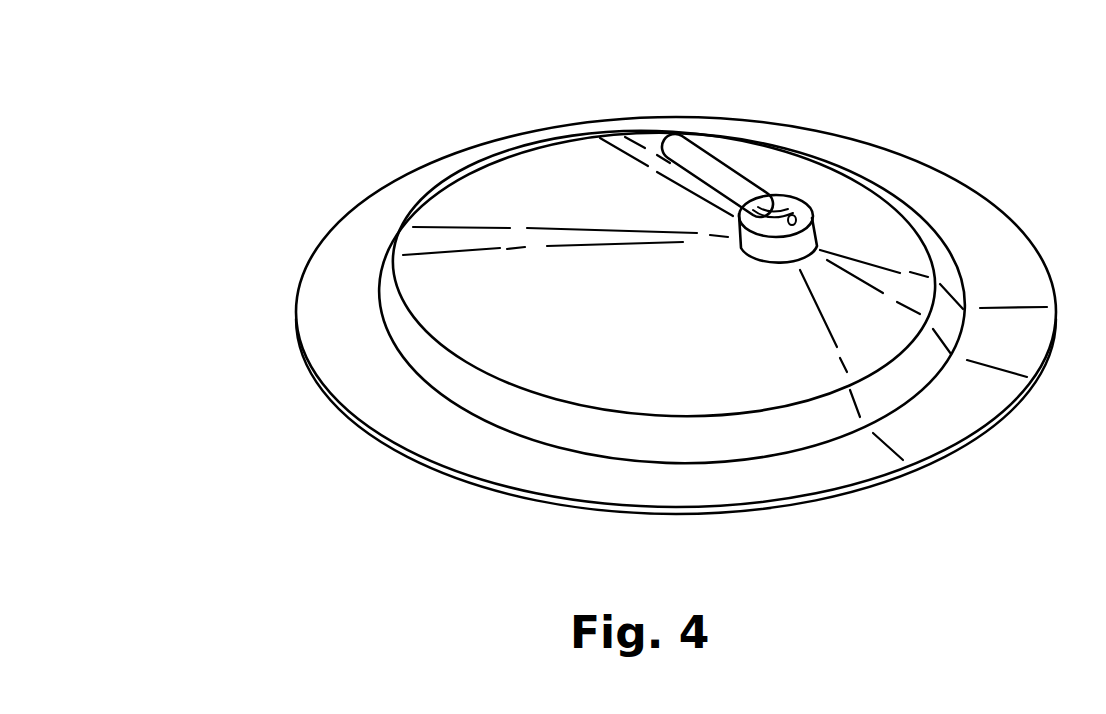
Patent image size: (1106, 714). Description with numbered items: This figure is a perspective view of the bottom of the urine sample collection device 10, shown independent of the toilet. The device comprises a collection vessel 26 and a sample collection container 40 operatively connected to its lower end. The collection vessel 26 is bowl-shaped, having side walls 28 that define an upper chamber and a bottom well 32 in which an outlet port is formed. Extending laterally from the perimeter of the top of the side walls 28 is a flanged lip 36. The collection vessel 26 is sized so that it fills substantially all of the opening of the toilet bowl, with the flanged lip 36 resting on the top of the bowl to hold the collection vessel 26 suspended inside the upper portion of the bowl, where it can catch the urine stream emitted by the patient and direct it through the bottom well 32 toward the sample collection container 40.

The urine sample collection device 10 is at (912, 94).
The collection vessel 26 is at (343, 322).
The side walls 28 is at (606, 348).
The bottom well 32 is at (753, 251).
The flanged lip 36 is at (997, 231).
The sample collection container 40 is at (700, 158).